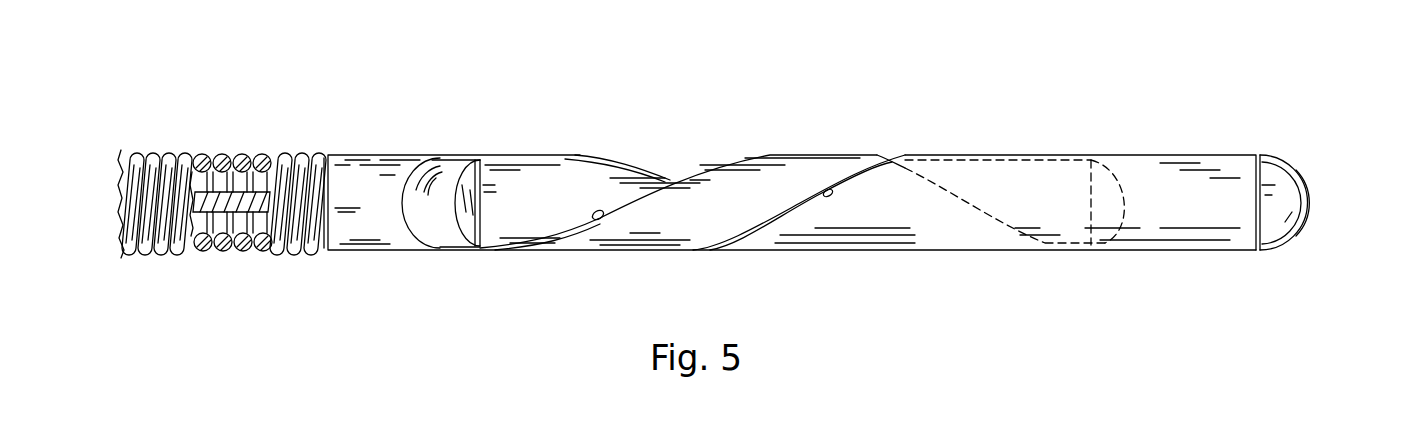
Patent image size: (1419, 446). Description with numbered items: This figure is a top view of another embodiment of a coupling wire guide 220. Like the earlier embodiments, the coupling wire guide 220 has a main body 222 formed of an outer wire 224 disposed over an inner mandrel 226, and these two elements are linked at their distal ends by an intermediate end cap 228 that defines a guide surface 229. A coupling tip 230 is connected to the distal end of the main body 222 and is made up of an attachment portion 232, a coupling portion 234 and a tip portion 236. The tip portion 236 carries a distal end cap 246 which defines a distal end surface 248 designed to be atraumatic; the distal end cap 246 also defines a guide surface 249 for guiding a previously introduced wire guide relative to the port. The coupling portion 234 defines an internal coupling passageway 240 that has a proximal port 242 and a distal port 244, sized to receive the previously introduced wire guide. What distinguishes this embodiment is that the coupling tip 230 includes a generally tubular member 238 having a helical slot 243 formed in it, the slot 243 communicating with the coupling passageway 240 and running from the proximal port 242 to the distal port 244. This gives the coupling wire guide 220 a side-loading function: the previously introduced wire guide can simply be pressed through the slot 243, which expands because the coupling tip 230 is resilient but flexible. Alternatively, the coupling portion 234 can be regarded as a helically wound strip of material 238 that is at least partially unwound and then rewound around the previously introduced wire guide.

The coupling wire guide 220 is at (128, 72).
The main body 222 is at (297, 150).
The outer wire 224 is at (202, 150).
The inner mandrel 226 is at (243, 150).
The intermediate end cap 228 is at (439, 249).
The guide surface 229 is at (467, 205).
The coupling tip 230 is at (620, 112).
The attachment portion 232 is at (425, 153).
The coupling portion 234 is at (820, 155).
The tip portion 236 is at (1136, 155).
The tubular member 238 is at (727, 205).
The coupling passageway 240 is at (597, 216).
The proximal port 242 is at (507, 155).
The helical slot 243 is at (832, 193).
The distal port 244 is at (948, 190).
The distal end cap 246 is at (1285, 185).
The distal end surface 248 is at (1310, 197).
The guide surface 249 is at (1105, 200).